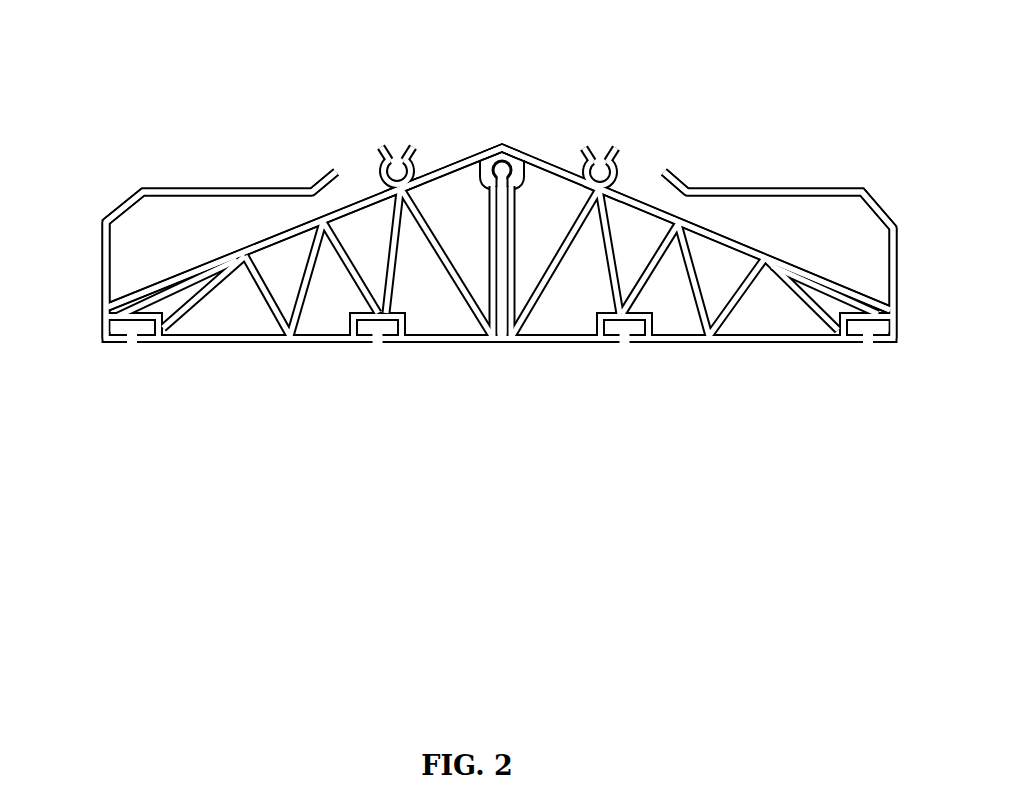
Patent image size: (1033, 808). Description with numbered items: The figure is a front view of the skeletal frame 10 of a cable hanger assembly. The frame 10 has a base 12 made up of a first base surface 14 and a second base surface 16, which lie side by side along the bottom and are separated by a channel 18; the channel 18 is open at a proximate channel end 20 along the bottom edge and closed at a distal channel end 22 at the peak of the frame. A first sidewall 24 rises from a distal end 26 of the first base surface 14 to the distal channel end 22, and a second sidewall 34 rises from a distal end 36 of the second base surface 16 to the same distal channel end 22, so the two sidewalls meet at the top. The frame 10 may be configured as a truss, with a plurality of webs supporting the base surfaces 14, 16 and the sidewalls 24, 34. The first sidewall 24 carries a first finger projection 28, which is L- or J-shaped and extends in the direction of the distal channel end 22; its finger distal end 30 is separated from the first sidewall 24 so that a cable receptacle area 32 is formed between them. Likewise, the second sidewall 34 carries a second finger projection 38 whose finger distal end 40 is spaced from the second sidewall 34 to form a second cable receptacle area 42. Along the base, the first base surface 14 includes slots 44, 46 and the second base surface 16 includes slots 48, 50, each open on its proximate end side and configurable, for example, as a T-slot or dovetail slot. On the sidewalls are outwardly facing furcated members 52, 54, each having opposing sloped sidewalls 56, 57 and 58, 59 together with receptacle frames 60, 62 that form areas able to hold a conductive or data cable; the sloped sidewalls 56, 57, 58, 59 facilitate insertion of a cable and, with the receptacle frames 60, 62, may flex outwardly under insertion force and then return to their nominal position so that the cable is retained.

The skeletal frame 10 is at (742, 88).
The base 12 is at (499, 393).
The first base surface 14 is at (228, 343).
The second base surface 16 is at (735, 345).
The channel 18 is at (506, 152).
The proximate channel end 20 is at (502, 342).
The distal channel end 22 is at (500, 143).
The first sidewall 24 is at (347, 205).
The distal end of the first base surface 26 is at (101, 316).
The first finger projection 28 is at (195, 187).
The finger distal end 30 is at (336, 166).
The cable receptacle area 32 is at (166, 255).
The second sidewall 34 is at (632, 178).
The distal end of the second base surface 36 is at (897, 331).
The second finger projection 38 is at (825, 187).
The finger distal end 40 is at (681, 160).
The second cable receptacle area 42 is at (806, 240).
The slot 44 is at (137, 343).
The slot 46 is at (380, 345).
The slot 48 is at (628, 345).
The slot 50 is at (867, 344).
The outwardly facing furcated member 52 is at (424, 143).
The outwardly facing furcated member 54 is at (573, 157).
The sloped sidewall 56 is at (386, 147).
The sloped sidewall 57 is at (408, 147).
The sloped sidewall 58 is at (598, 145).
The sloped sidewall 59 is at (618, 157).
The receptacle frame 60 is at (424, 162).
The receptacle frame 62 is at (630, 182).